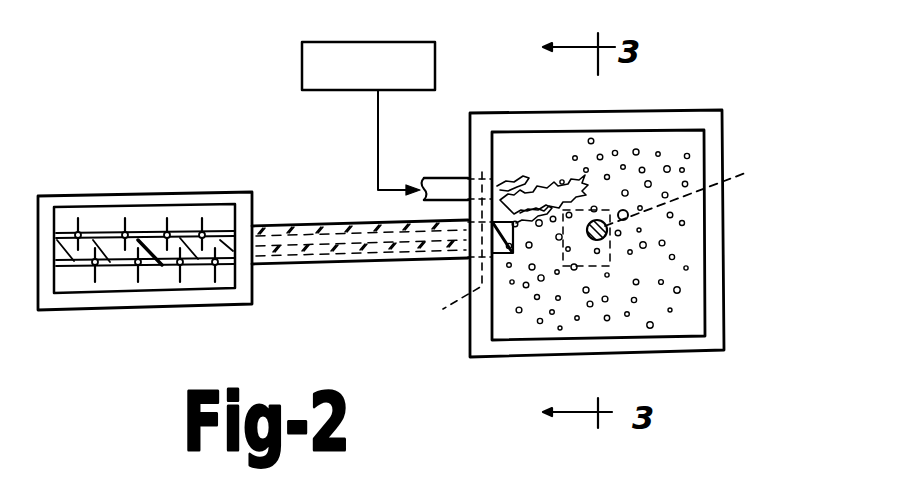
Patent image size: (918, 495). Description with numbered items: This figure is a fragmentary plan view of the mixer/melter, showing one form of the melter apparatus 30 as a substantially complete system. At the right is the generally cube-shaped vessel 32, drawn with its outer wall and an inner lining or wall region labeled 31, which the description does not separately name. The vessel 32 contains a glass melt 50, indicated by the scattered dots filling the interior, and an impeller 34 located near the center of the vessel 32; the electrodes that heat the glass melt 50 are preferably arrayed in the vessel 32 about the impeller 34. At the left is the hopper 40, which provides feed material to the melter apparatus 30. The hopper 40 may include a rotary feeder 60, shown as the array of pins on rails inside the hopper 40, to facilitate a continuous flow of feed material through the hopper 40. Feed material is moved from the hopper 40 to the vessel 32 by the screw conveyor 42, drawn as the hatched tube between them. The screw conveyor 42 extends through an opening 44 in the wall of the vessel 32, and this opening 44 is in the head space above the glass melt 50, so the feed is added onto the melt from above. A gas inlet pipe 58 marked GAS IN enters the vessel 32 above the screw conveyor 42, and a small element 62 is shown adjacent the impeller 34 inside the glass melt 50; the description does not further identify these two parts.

The melter apparatus 30 is at (823, 28).
The chamber inner wall 31 is at (726, 232).
The vessel 32 is at (675, 110).
The impeller 34 is at (675, 212).
The hopper 40 is at (181, 192).
The screw conveyor 42 is at (322, 268).
The opening 44 is at (460, 248).
The glass melt 50 is at (640, 317).
The gas inlet pipe 58 is at (445, 176).
The rotary feeder 60 is at (168, 267).
The spark gap 62 is at (626, 220).